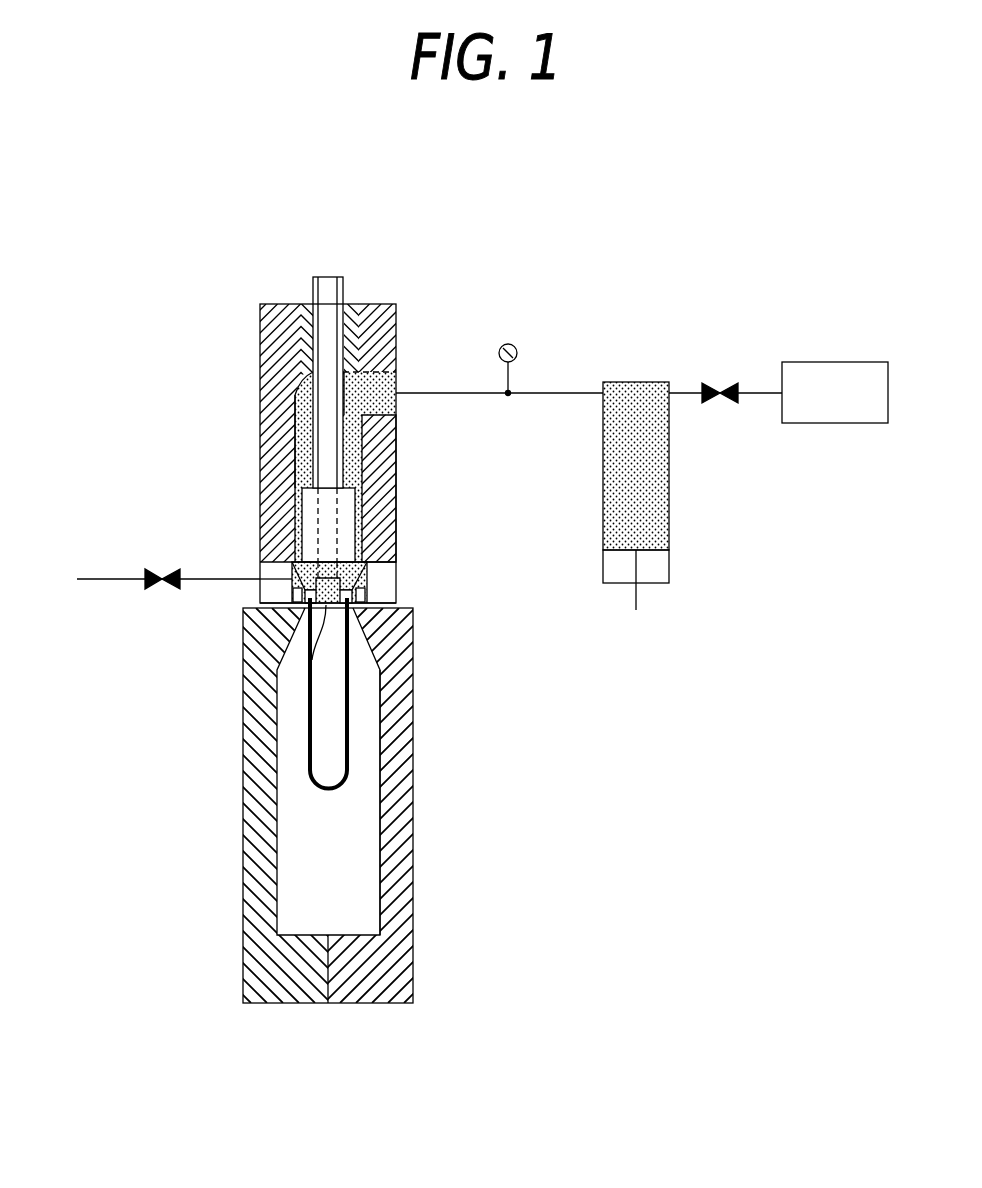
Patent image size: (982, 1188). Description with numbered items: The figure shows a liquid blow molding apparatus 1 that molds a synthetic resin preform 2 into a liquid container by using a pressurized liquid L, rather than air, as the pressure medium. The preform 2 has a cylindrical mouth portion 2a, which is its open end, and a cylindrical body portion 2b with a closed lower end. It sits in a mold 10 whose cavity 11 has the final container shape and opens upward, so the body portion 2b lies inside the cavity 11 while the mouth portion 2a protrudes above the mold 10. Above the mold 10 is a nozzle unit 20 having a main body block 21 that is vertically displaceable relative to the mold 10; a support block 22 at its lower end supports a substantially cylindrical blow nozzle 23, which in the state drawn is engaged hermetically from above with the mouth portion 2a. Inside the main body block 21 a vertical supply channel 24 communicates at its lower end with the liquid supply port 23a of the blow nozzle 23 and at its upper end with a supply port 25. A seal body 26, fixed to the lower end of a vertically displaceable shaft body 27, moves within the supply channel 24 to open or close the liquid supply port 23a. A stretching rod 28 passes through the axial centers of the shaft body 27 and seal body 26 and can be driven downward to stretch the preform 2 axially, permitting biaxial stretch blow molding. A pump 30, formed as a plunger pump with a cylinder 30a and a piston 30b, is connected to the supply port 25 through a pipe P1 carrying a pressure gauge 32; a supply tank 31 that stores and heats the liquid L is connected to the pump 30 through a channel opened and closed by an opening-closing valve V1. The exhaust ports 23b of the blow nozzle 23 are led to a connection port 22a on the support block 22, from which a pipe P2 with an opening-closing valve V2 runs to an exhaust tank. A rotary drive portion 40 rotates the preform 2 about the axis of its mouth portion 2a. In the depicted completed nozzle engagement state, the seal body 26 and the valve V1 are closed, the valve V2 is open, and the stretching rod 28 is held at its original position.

The liquid blow molding apparatus 1 is at (462, 305).
The preform 2 is at (352, 703).
The mouth portion 2a is at (372, 600).
The body portion 2b is at (349, 745).
The mold 10 is at (414, 823).
The cavity 11 is at (380, 848).
The nozzle unit 20 is at (369, 463).
The main body block 21 is at (278, 330).
The support block 22 is at (259, 565).
The connection port 22a is at (258, 580).
The blow nozzle 23 is at (367, 572).
The liquid supply port 23a is at (380, 588).
The exhaust ports 23b is at (306, 610).
The supply channel 24 is at (300, 408).
The supply port 25 is at (378, 384).
The seal body 26 is at (345, 520).
The shaft body 27 is at (313, 292).
The stretching rod 28 is at (318, 616).
The pump 30 is at (669, 496).
The cylinder 30a is at (669, 458).
The piston 30b is at (655, 552).
The supply tank 31 is at (835, 392).
The pressure gauge 32 is at (516, 347).
The rotary drive portion 40 is at (288, 607).
The liquid L is at (362, 440).
The pipe P1 is at (575, 393).
The pipe P2 is at (92, 579).
The opening-closing valve V1 is at (720, 386).
The opening-closing valve V2 is at (155, 590).